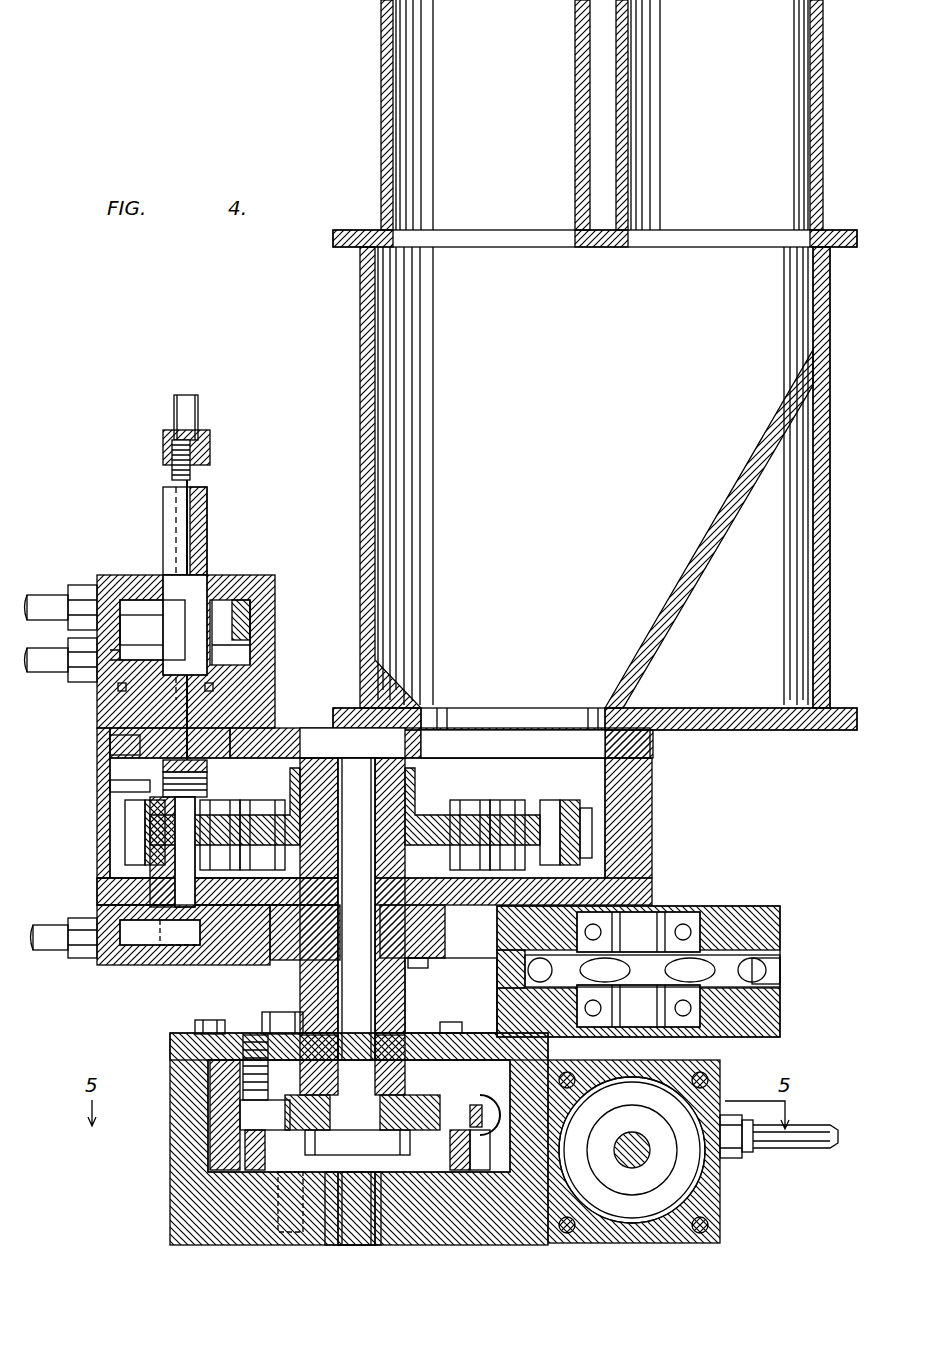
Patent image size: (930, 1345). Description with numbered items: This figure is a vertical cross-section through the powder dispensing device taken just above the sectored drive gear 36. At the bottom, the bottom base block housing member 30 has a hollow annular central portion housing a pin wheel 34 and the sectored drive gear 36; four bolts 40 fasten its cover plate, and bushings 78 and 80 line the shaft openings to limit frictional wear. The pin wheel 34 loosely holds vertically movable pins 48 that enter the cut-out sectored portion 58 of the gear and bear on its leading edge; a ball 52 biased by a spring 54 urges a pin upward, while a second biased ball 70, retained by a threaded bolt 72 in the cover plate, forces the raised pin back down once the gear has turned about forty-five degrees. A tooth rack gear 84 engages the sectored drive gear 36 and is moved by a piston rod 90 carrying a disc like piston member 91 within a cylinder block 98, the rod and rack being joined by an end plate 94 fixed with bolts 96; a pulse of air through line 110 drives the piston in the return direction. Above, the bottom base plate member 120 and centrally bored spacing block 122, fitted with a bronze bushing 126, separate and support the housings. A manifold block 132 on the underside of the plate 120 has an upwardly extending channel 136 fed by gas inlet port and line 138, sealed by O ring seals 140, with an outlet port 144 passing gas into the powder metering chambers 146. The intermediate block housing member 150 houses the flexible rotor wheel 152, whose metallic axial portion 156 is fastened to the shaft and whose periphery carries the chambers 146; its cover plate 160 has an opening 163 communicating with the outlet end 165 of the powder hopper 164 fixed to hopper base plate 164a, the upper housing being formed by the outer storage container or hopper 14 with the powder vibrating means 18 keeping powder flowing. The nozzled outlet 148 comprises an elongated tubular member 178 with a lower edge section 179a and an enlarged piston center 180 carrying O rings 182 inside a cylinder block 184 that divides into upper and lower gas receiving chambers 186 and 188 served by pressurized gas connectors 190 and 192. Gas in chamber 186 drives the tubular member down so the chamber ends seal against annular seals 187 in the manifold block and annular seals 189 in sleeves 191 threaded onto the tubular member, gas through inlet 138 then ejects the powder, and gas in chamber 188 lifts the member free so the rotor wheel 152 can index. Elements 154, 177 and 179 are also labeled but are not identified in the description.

The outer storage container or hopper 14 is at (828, 600).
The powder vibrating means 18 is at (765, 930).
The bottom base block housing member 30 is at (185, 1200).
The pin wheel 34 is at (480, 1172).
The sectored drive gear 36 is at (432, 1102).
The bolts 40 is at (212, 1024).
The pins 48 is at (263, 1172).
The ball 52 is at (300, 1183).
The spring 54 is at (300, 1212).
The cut-out sectored portion 58 is at (240, 1115).
The second biased ball 70 is at (230, 1092).
The threaded bolt 72 is at (282, 1020).
The bushing 78 is at (385, 1230).
The bushing 80 is at (395, 1048).
The tooth rack gear 84 is at (489, 1075).
The piston rod 90 is at (640, 1140).
The disc like piston member 91 is at (687, 1172).
The connecting end plate 94 is at (585, 1195).
The bolts 96 is at (710, 1082).
The cylinder block 98 is at (705, 1200).
The line 110 is at (790, 1140).
The bottom base plate member 120 is at (640, 896).
The centrally bored spacing block 122 is at (445, 948).
The bronze bushing 126 is at (436, 931).
The manifold block 132 is at (132, 965).
The upwardly extending channel 136 is at (158, 950).
The gas inlet port and line 138 is at (70, 955).
The O ring seals 140 is at (97, 885).
The outlet port 144 is at (215, 955).
The powder metering chambers 146 is at (585, 808).
The nozzled outlet 148 is at (190, 412).
The intermediate block housing member 150 is at (652, 828).
The flexible rotor wheel 152 is at (478, 850).
The sleeve 154 is at (415, 780).
The axial portion 156 is at (440, 743).
The cover plate 160 is at (108, 765).
The opening 163 is at (510, 750).
The powder hopper 164 is at (823, 540).
The hopper base plate 164a is at (828, 732).
The outlet end 165 is at (507, 718).
The seal 177 is at (213, 688).
The elongated tubular member 178 is at (209, 565).
The passage 179 is at (105, 745).
The lower edge section 179a is at (120, 790).
The enlarged piston center 180 is at (262, 615).
The O rings 182 is at (250, 636).
The cylinder block 184 is at (265, 665).
The upper gas receiving chamber 186 is at (128, 598).
The annular seals 187 is at (200, 895).
The lower gas receiving chamber 188 is at (110, 690).
The annular seals 189 is at (210, 790).
The pressurized gas connector 190 is at (72, 598).
The sleeves 191 is at (210, 768).
The pressurized gas connector 192 is at (61, 675).